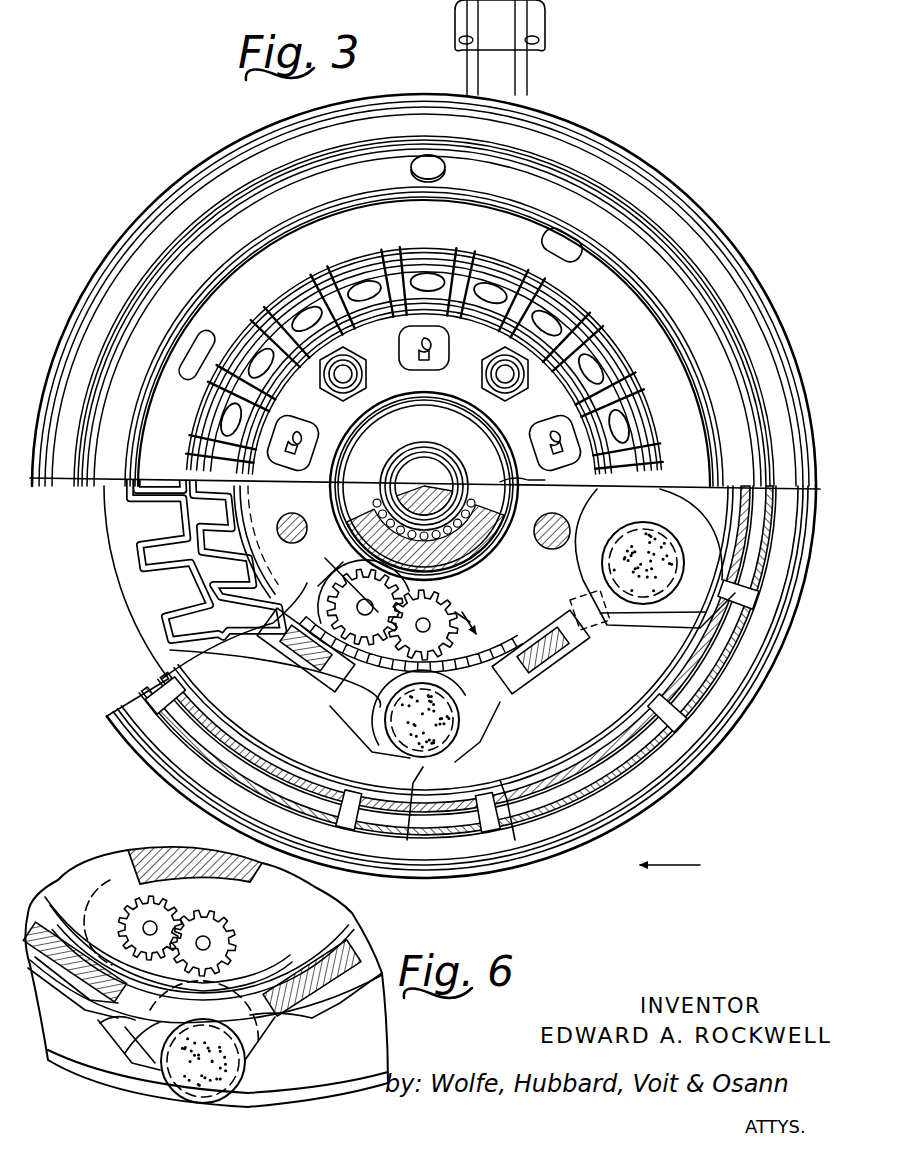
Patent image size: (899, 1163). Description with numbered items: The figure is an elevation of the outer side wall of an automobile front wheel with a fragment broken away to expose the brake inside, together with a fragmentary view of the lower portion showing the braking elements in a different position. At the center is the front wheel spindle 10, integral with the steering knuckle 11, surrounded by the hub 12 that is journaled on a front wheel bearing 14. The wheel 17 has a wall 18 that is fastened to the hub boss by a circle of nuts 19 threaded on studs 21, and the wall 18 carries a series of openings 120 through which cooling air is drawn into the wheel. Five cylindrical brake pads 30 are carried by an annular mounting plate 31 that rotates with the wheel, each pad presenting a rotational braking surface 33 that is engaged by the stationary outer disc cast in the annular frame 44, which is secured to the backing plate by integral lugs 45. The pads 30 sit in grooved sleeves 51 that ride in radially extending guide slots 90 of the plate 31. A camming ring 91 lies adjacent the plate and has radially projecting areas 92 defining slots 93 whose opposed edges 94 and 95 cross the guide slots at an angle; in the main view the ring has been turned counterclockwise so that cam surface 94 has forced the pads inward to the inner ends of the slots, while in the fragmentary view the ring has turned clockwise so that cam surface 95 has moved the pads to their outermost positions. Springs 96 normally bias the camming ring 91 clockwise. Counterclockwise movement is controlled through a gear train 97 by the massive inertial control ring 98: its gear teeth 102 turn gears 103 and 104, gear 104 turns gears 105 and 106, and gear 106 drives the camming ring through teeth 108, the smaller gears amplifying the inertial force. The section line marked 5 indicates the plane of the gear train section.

In FIG. 3, the section line 5- 5 is at (392, 608).
In FIG. 3, the front wheel spindle 10 is at (434, 488).
In FIG. 3, the steering knuckle 11 is at (528, 82).
In FIG. 3, the hub 12 is at (545, 488).
In FIG. 3, the front wheel bearing 14 is at (452, 538).
In FIG. 3, the wheel 17 is at (507, 243).
In FIG. 3, the wall 18 is at (425, 260).
In FIG. 3, the nuts 19 is at (500, 358).
In FIG. 3, the studs 21 is at (572, 522).
In FIG. 3, the brake pads 30 is at (395, 734).
In FIG. 6, the brake pads 30 is at (172, 1097).
In FIG. 3, the mounting plate 31 is at (273, 667).
In FIG. 6, the mounting plate 31 is at (292, 1020).
In FIG. 3, the rotational braking surface 33 is at (397, 720).
In FIG. 6, the rotational braking surface 33 is at (172, 1055).
In FIG. 3, the annular frame 44 is at (184, 584).
In FIG. 3, the lugs 45 is at (495, 821).
In FIG. 3, the sleeves 51 is at (498, 728).
In FIG. 6, the sleeves 51 is at (248, 1053).
In FIG. 3, the guide slots 90 is at (453, 816).
In FIG. 3, the camming ring 91 is at (510, 614).
In FIG. 6, the camming ring 91 is at (305, 920).
In FIG. 3, the radially projecting areas 92 is at (540, 806).
In FIG. 3, the slots 93 is at (500, 816).
In FIG. 6, the slots 93 is at (125, 1053).
In FIG. 3, the slot edge 94 is at (440, 824).
In FIG. 3, the slot edge 95 is at (500, 718).
In FIG. 3, the springs 96 is at (548, 650).
In FIG. 6, the springs 96 is at (315, 988).
In FIG. 3, the gear train 97 is at (458, 613).
In FIG. 3, the inertial control ring 98 is at (540, 500).
In FIG. 3, the gear teeth 102 is at (339, 572).
In FIG. 6, the gear teeth 102 is at (88, 856).
In FIG. 3, the gear 103 is at (345, 583).
In FIG. 6, the gear 103 is at (126, 896).
In FIG. 3, the gear 104 is at (290, 632).
In FIG. 6, the gear 104 is at (130, 910).
In FIG. 3, the gear 105 is at (446, 604).
In FIG. 6, the gear 105 is at (288, 890).
In FIG. 3, the gear 106 is at (315, 652).
In FIG. 3, the teeth 108 is at (519, 653).
In FIG. 6, the teeth 108 is at (192, 969).
In FIG. 3, the openings 120 is at (575, 314).